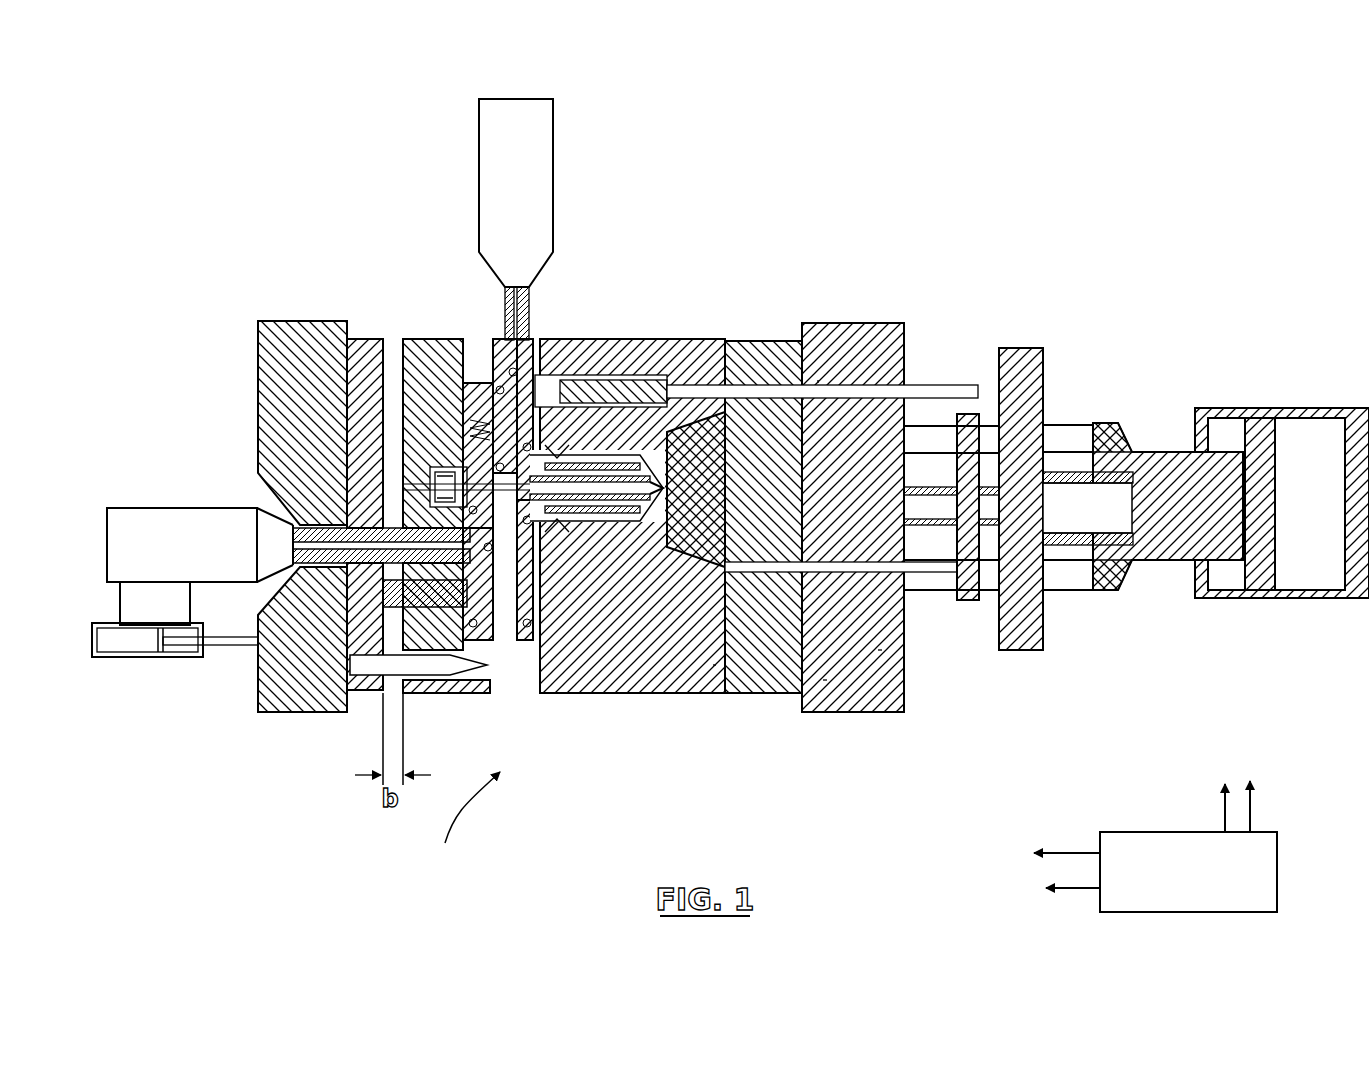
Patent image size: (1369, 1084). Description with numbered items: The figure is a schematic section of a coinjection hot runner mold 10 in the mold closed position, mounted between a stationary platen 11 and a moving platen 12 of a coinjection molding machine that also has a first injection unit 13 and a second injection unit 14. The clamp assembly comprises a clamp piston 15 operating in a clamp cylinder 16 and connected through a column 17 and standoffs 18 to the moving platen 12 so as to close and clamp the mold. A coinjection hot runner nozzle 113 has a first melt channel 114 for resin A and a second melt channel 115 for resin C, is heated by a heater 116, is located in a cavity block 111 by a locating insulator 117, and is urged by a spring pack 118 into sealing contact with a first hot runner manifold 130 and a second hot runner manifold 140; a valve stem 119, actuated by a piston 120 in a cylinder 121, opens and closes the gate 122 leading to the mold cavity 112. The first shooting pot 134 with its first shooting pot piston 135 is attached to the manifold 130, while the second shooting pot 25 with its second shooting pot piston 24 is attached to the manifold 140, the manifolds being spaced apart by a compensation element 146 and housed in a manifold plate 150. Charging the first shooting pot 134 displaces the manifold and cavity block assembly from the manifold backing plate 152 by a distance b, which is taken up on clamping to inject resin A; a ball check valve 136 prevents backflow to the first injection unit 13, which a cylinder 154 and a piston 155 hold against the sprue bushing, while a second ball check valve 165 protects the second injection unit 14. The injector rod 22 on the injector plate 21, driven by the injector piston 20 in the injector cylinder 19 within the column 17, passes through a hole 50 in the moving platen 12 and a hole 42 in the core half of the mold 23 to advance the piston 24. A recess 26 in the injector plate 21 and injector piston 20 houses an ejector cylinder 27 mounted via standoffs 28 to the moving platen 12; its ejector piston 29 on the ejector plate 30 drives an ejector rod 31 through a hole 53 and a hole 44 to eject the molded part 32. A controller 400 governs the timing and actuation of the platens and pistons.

The coinjection hot runner mold 10 is at (460, 822).
The stationary platen 11 is at (285, 335).
The moving platen 12 is at (850, 340).
The first injection unit 13 is at (128, 508).
The second injection unit 14 is at (497, 140).
The clamp piston 15 is at (1250, 425).
The clamp cylinder 16 is at (1325, 412).
The column 17 is at (1165, 460).
The standoffs 18 is at (1063, 432).
The injector cylinder 19 is at (1148, 530).
The injector piston 20 is at (1112, 440).
The injector plate 21 is at (1030, 360).
The injector rod 22 is at (930, 385).
The core half of the mold 23 is at (770, 385).
The second shooting pot piston 24 is at (690, 375).
The second shooting pot 25 is at (548, 360).
The recess 26 is at (1085, 575).
The ejector cylinder 27 is at (1055, 545).
The standoffs 28 is at (930, 527).
The ejector piston 29 is at (1020, 640).
The ejector plate 30 is at (968, 420).
The ejector rod 31 is at (880, 650).
The molded part 32 is at (702, 665).
The hole 42 is at (803, 398).
The hole 44 is at (770, 660).
The hole 50 is at (818, 380).
The hole 53 is at (825, 680).
The cavity block 111 is at (700, 440).
The mold cavity 112 is at (708, 470).
The coinjection hot runner nozzle 113 is at (635, 430).
The first melt channel 114 is at (545, 650).
The second melt channel 115 is at (588, 650).
The heater 116 is at (610, 660).
The locating insulator 117 is at (515, 660).
The spring pack 118 is at (585, 390).
The valve stem 119 is at (615, 400).
The piston 120 is at (440, 478).
The cylinder 121 is at (432, 495).
The gate 122 is at (715, 665).
The first hot runner manifold 130 is at (488, 655).
The first shooting pot 134 is at (378, 662).
The first shooting pot piston 135 is at (340, 575).
The ball check valve 136 is at (390, 600).
The second hot runner manifold 140 is at (485, 365).
The compensation element 146 is at (468, 425).
The manifold plate 150 is at (455, 350).
The manifold backing plate 152 is at (355, 345).
The cylinder 154 is at (113, 640).
The piston 155 is at (160, 645).
The second ball check valve 165 is at (515, 300).
The controller 400 is at (1130, 845).